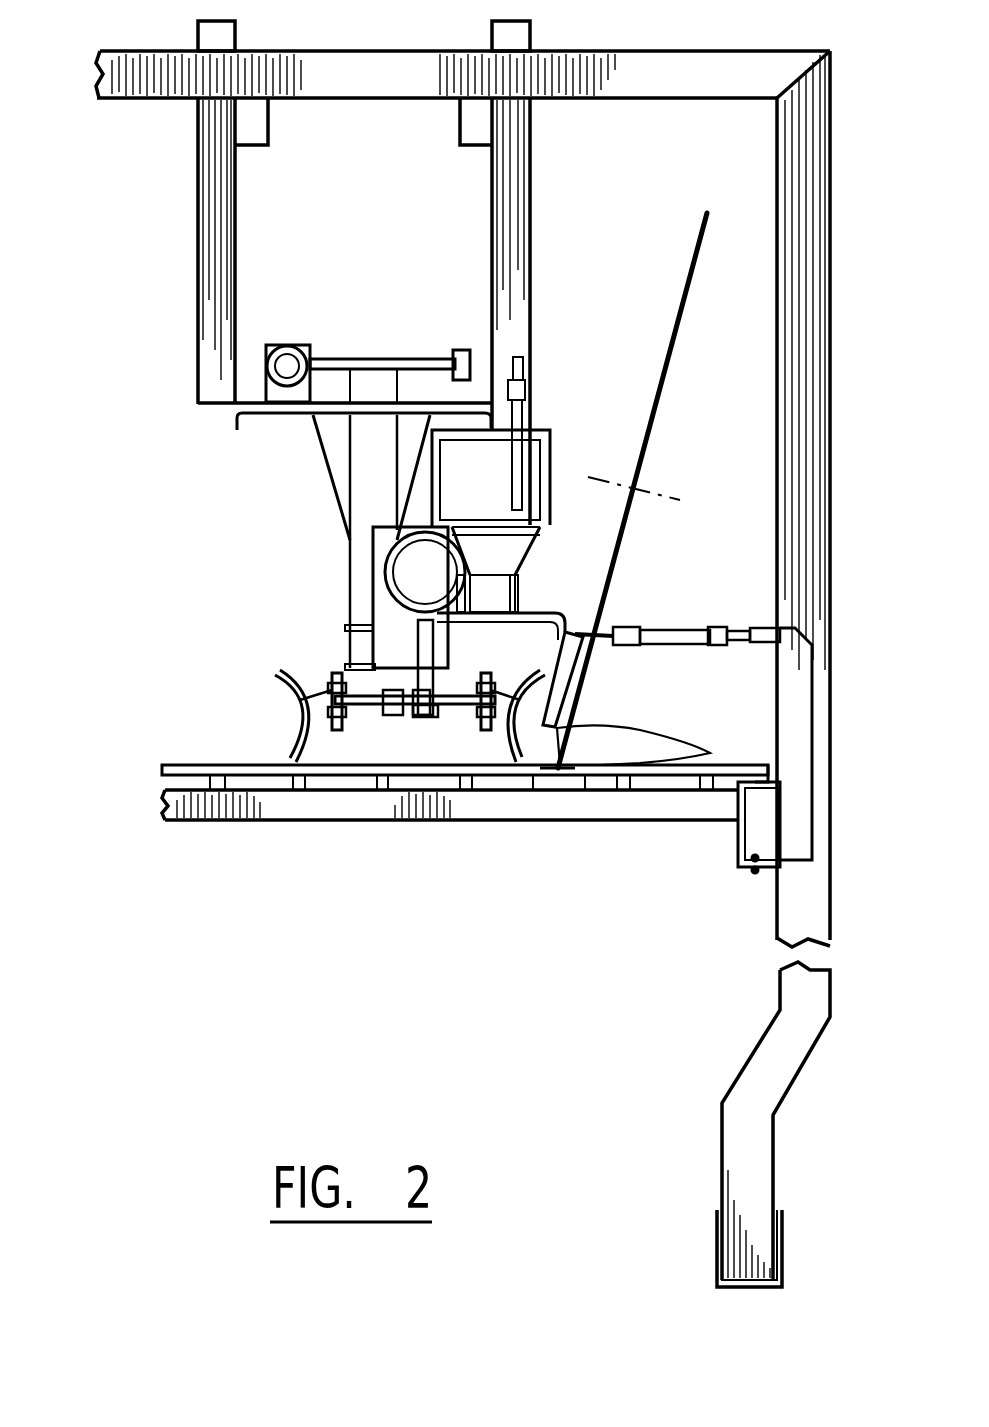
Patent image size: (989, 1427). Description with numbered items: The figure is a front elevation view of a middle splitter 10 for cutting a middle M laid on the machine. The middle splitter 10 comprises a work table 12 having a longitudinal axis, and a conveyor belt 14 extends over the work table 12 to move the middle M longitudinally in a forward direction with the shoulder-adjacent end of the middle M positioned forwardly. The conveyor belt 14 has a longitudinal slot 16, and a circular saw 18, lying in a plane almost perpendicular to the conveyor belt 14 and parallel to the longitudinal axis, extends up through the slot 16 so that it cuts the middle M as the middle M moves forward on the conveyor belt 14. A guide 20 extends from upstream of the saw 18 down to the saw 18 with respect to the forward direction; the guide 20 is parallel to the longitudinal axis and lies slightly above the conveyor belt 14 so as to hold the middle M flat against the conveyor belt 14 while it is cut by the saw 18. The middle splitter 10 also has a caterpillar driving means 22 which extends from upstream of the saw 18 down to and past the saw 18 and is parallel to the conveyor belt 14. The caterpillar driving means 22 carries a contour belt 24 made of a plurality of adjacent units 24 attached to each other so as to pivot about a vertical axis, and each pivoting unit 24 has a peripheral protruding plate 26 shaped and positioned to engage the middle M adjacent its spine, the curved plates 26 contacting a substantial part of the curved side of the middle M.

The middle splitter 10 is at (212, 522).
The work table 12 is at (465, 807).
The conveyor belt 14 is at (633, 770).
The longitudinal slot 16 is at (558, 772).
The circular saw 18 is at (660, 418).
The guide 20 is at (580, 695).
The caterpillar driving means 22 is at (378, 712).
The contour belt 24 is at (352, 712).
The peripheral protruding plate 26 is at (273, 683).
The middle M is at (647, 747).